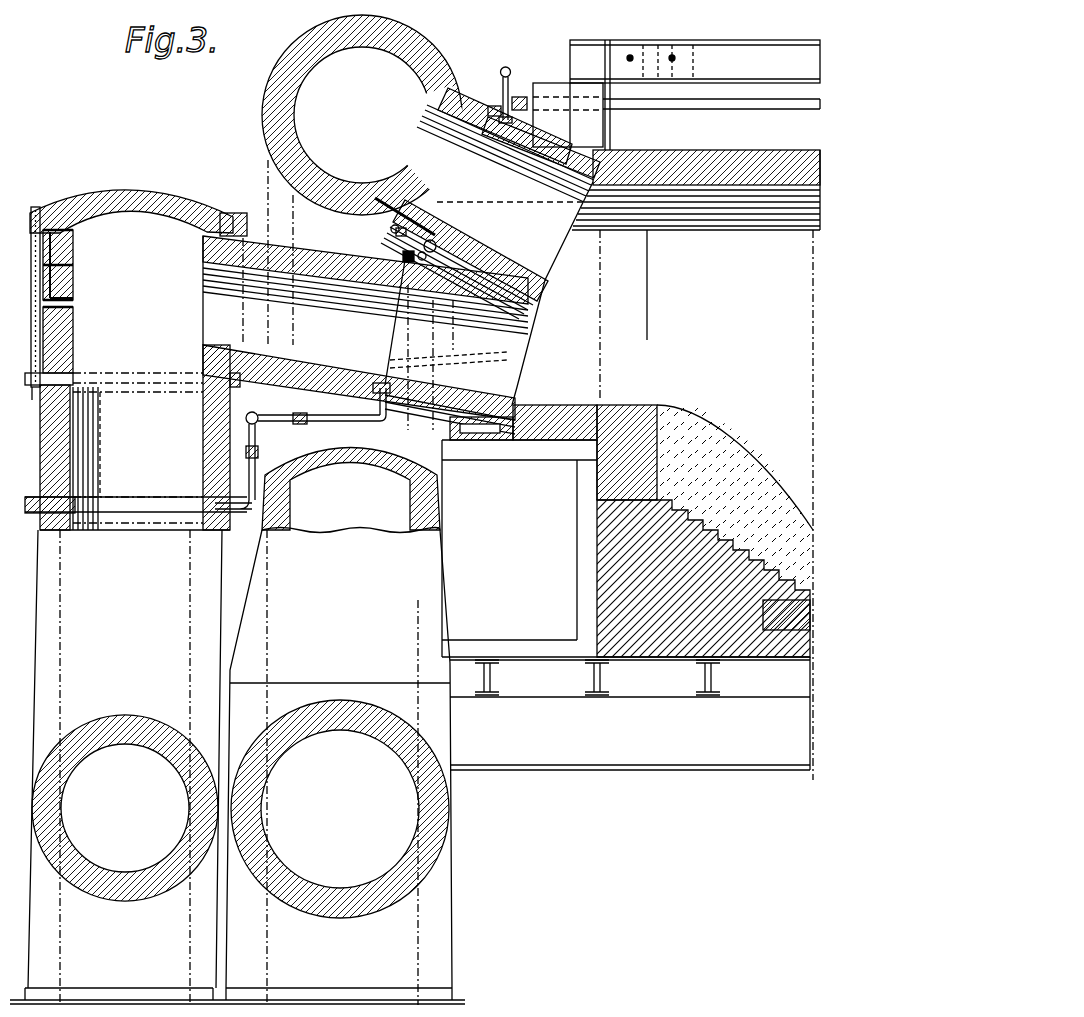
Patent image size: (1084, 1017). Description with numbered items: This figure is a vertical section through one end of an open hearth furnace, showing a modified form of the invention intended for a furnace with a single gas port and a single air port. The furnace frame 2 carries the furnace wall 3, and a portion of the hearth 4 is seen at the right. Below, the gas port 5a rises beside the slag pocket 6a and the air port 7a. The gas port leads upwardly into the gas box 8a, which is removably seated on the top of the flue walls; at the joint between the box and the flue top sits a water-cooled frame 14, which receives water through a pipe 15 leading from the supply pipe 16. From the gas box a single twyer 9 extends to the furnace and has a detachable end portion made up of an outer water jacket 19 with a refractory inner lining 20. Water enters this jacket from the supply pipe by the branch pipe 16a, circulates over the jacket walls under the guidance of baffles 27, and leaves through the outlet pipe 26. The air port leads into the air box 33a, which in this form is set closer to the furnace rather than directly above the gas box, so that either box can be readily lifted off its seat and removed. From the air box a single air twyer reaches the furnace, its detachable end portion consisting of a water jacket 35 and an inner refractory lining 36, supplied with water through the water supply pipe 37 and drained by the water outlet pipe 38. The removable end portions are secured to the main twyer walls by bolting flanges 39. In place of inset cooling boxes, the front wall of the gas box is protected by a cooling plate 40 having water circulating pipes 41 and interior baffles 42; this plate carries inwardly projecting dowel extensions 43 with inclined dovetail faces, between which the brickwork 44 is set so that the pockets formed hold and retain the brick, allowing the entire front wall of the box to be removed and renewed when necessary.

The frame 2 is at (666, 95).
The wall 3 is at (714, 165).
The hearth 4 is at (712, 464).
The gas port 5a is at (116, 767).
The slag pocket 6a is at (125, 808).
The air port 7a is at (343, 727).
The gas box 8a is at (138, 360).
The twyer 9 is at (365, 328).
The water-cooled frame 14 is at (185, 512).
The pipe 15 is at (258, 450).
The supply pipe 16 is at (254, 409).
The branch pipe 16a is at (324, 403).
The water jacket 19 is at (529, 298).
The refractory inner lining 20 is at (530, 318).
The outlet pipe 26 is at (426, 258).
The baffles 27 is at (478, 360).
The air box 33a is at (368, 115).
The water jacket 35 is at (549, 152).
The inner refractory lining 36 is at (525, 262).
The water supply pipe 37 is at (388, 228).
The water outlet pipe 38 is at (509, 76).
The bolting flanges 39 is at (497, 105).
The cooling plate 40 is at (73, 335).
The water circulating pipes 41 is at (30, 414).
The interior baffles 42 is at (73, 256).
The dowel extensions 43 is at (73, 233).
The brickwork 44 is at (73, 278).